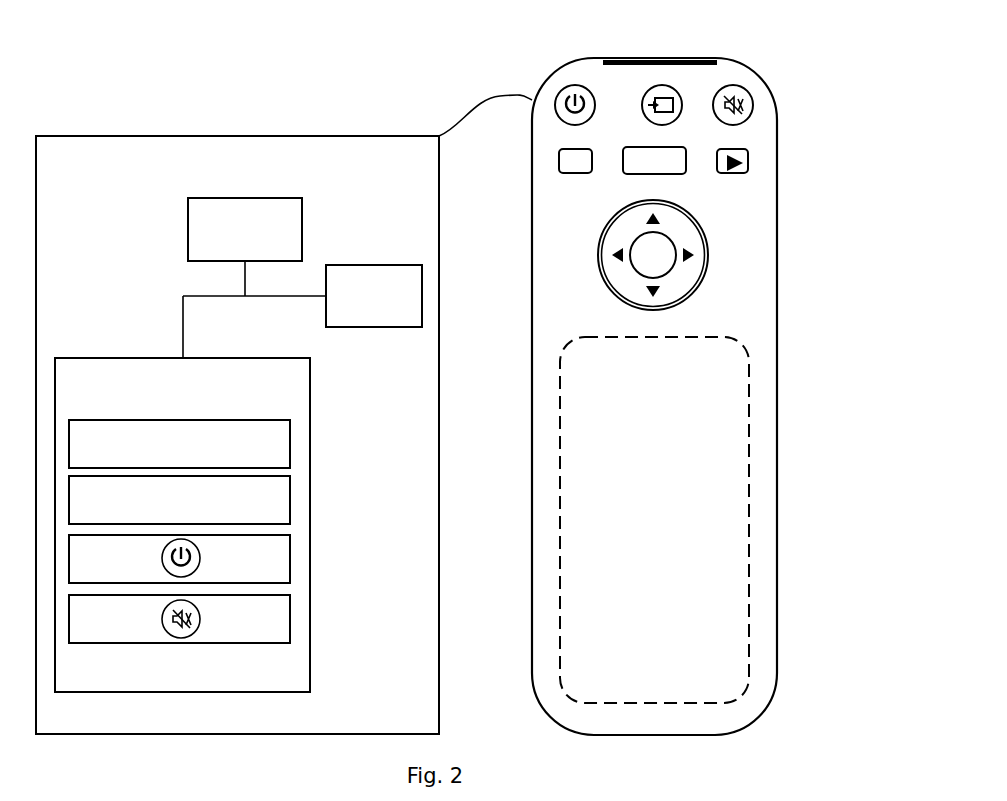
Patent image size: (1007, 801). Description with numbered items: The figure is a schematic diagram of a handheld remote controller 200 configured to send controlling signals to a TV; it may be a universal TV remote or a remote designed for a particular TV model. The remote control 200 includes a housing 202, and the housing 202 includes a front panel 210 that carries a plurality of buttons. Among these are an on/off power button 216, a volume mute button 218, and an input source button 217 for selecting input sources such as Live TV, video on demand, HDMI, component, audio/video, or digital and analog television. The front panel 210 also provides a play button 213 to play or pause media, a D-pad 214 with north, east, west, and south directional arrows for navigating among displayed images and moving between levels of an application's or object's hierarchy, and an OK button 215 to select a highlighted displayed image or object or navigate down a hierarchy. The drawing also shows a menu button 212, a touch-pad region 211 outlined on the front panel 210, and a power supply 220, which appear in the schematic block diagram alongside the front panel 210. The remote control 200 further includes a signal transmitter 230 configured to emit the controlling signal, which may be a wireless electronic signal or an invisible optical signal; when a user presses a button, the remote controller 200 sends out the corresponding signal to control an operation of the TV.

The handheld remote controller 200 is at (502, 41).
The housing 202 is at (777, 502).
The front panel 210 is at (310, 682).
The touch pad area 211 is at (740, 405).
The menu button 212 is at (290, 447).
The play button 213 is at (748, 165).
The D-pad 214 is at (606, 283).
The OK button 215 is at (290, 503).
The power button 216 is at (290, 560).
The input source button 217 is at (642, 105).
The mute button 218 is at (290, 620).
The power supply 220 is at (370, 328).
The signal transmitter 230 is at (188, 233).